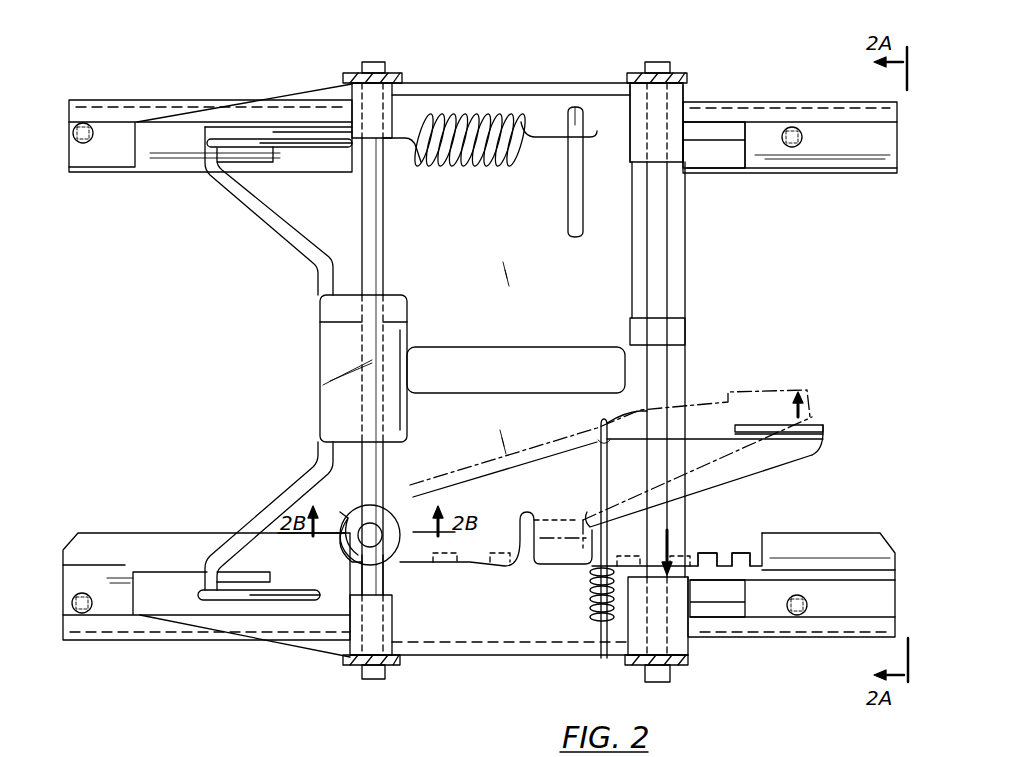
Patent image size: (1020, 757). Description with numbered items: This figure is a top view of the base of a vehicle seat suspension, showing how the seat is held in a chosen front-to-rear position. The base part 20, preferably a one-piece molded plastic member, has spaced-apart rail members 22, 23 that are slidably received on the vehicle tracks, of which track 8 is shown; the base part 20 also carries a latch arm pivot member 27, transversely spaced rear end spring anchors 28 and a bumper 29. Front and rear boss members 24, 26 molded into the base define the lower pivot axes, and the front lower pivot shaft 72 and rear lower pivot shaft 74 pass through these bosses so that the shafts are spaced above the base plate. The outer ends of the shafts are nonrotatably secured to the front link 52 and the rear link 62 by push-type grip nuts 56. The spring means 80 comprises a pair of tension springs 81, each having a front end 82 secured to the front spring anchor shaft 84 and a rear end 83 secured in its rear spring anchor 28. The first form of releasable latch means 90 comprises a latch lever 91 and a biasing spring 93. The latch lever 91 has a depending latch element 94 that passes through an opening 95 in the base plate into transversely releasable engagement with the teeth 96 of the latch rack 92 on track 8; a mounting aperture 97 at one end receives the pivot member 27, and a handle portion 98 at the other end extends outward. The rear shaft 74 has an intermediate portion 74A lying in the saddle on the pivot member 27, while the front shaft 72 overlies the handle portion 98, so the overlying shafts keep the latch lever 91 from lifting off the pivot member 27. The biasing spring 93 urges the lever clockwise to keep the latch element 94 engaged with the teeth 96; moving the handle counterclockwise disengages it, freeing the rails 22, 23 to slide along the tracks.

The track member 8 is at (828, 640).
The base part 20 is at (283, 252).
The rail member 22 is at (745, 602).
The rail member 23 is at (745, 140).
The front boss member 24 is at (687, 92).
The rear boss member 26 is at (392, 100).
The latch arm pivot member 27 is at (345, 505).
The rear end spring anchor 28 is at (207, 143).
The bumper 29 is at (335, 313).
The front link 52 is at (688, 76).
The push-type grip nut 56 is at (362, 66).
The rear link 62 is at (395, 75).
The front lower pivot shaft 72 is at (685, 272).
The rear lower pivot shaft 74 is at (383, 272).
The intermediate portion 74A is at (360, 580).
The spring means 80 is at (504, 130).
The tension spring 81 is at (487, 165).
The front end 82 is at (593, 135).
The rear end 83 is at (225, 140).
The front spring anchor shaft 84 is at (568, 212).
The releasable latch means 90 is at (652, 458).
The latch lever 91 is at (760, 468).
The latch rack 92 is at (722, 560).
The biasing spring 93 is at (598, 625).
The latch element 94 is at (600, 580).
The opening 95 is at (530, 562).
The teeth 96 is at (740, 553).
The mounting aperture 97 is at (836, 104).
The handle portion 98 is at (815, 423).